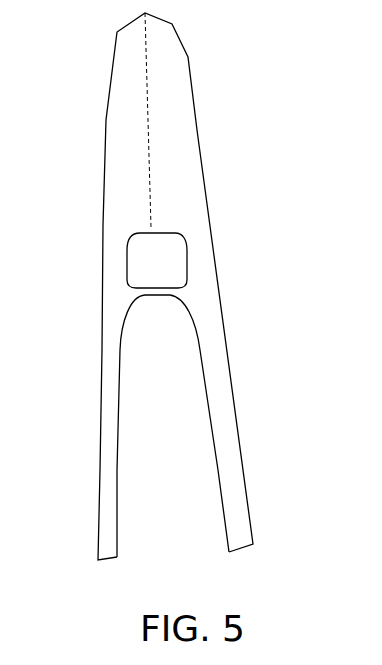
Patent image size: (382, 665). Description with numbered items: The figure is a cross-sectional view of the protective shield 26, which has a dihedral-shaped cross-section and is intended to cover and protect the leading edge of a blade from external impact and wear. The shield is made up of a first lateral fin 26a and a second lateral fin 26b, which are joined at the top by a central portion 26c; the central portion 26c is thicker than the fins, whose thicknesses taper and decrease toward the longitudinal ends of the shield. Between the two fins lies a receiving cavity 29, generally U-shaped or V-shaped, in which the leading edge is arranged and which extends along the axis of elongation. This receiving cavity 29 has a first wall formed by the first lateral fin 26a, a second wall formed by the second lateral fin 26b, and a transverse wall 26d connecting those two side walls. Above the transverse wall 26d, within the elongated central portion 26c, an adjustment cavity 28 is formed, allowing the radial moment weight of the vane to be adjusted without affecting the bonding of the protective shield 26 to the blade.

The protective shield 26 is at (184, 286).
The first lateral fin 26a is at (106, 411).
The second lateral fin 26b is at (213, 363).
The central portion 26c is at (178, 115).
The transverse wall 26d is at (155, 300).
The adjustment cavity 28 is at (173, 267).
The receiving cavity 29 is at (193, 433).